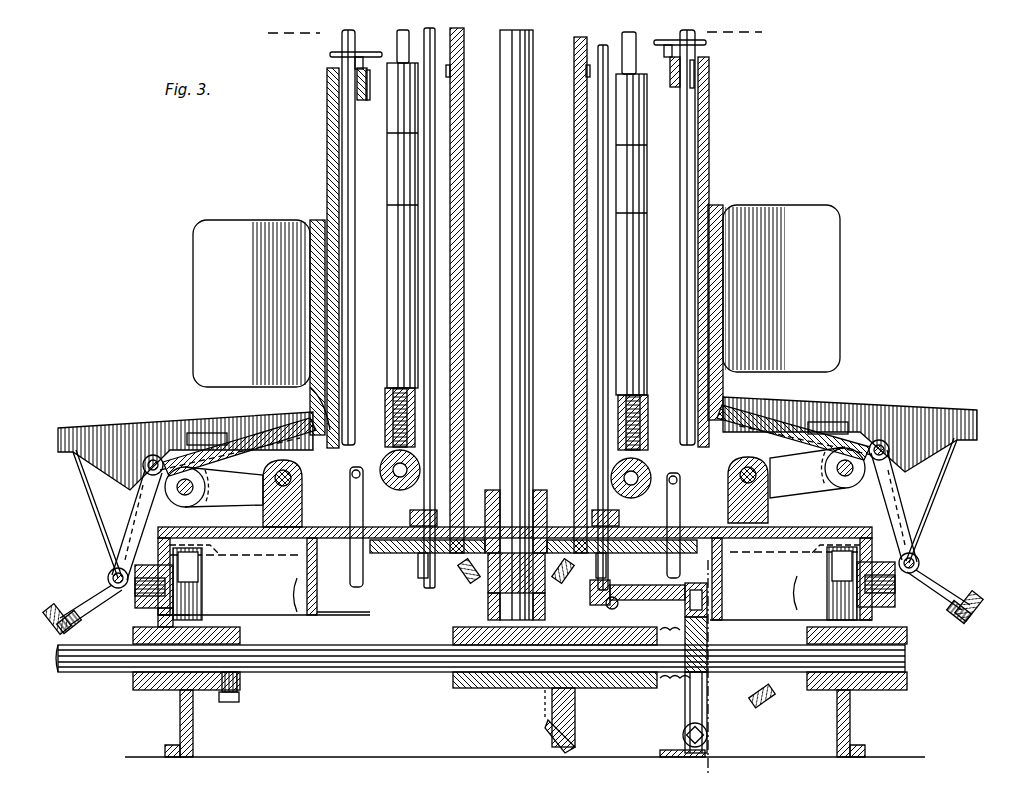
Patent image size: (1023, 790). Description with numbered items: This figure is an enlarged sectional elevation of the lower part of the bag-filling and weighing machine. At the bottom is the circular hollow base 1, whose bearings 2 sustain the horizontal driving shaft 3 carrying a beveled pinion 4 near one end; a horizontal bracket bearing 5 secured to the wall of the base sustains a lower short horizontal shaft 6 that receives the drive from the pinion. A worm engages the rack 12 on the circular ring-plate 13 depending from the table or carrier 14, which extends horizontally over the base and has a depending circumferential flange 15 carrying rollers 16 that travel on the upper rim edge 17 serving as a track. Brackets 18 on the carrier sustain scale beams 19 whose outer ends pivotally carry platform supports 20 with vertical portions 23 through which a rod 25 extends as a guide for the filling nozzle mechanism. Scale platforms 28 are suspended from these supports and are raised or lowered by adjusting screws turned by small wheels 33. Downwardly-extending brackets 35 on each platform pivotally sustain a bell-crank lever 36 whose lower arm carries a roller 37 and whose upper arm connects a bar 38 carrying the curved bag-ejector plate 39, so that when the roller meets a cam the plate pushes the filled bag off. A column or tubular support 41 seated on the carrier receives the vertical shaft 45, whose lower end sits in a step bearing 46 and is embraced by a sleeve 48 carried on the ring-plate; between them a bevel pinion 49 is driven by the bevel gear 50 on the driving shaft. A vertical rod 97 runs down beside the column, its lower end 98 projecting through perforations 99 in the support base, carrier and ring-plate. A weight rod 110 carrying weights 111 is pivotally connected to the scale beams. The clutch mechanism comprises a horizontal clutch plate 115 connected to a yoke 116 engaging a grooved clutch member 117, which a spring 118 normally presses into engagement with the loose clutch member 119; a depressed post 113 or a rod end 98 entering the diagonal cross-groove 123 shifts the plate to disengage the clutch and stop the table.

The circular hollow base 1 is at (180, 722).
The bearings 2 is at (135, 690).
The horizontal driving shaft 3 is at (323, 675).
The beveled pinion 4 is at (768, 711).
The horizontal bracket bearing 5 is at (160, 545).
The lower short horizontal shaft 6 is at (705, 674).
The rack 12 is at (295, 590).
The circular ring-plate 13 is at (320, 590).
The table or carrier 14 is at (257, 540).
The circular depending circumferential flange 15 is at (155, 617).
The rollers 16 is at (515, 583).
The upper rim edge 17 is at (210, 615).
The brackets 18 is at (302, 500).
The scale beams 19 is at (660, 455).
The platform supports 20 is at (195, 437).
The vertical portions 23 is at (327, 160).
The rod 25 is at (345, 130).
The scale platforms 28 is at (72, 428).
The small wheels 33 is at (330, 54).
The downwardly-extending brackets 35 is at (95, 487).
The bell-crank lever 36 is at (138, 513).
The roller 37 is at (56, 612).
The bar 38 is at (240, 430).
The curved bag-ejector plate 39 is at (516, 320).
The column or tubular support 41 is at (574, 60).
The shaft 45 is at (500, 170).
The step bearing 46 is at (453, 630).
The sleeve 48 is at (485, 490).
The bevel pinion 49 is at (468, 570).
The bevel gear 50 is at (545, 720).
The vertical rod 97 is at (435, 238).
The lower end 98 is at (424, 575).
The perforations 99 is at (410, 517).
The weight rod 110 is at (396, 52).
The weights 111 is at (410, 108).
The post 113 is at (415, 585).
The horizontal clutch plate 115 is at (650, 598).
The yoke 116 is at (707, 605).
The clutch member 117 is at (685, 690).
The spring 118 is at (668, 680).
The clutch member 119 is at (707, 705).
The diagonal cross-groove 123 is at (615, 590).